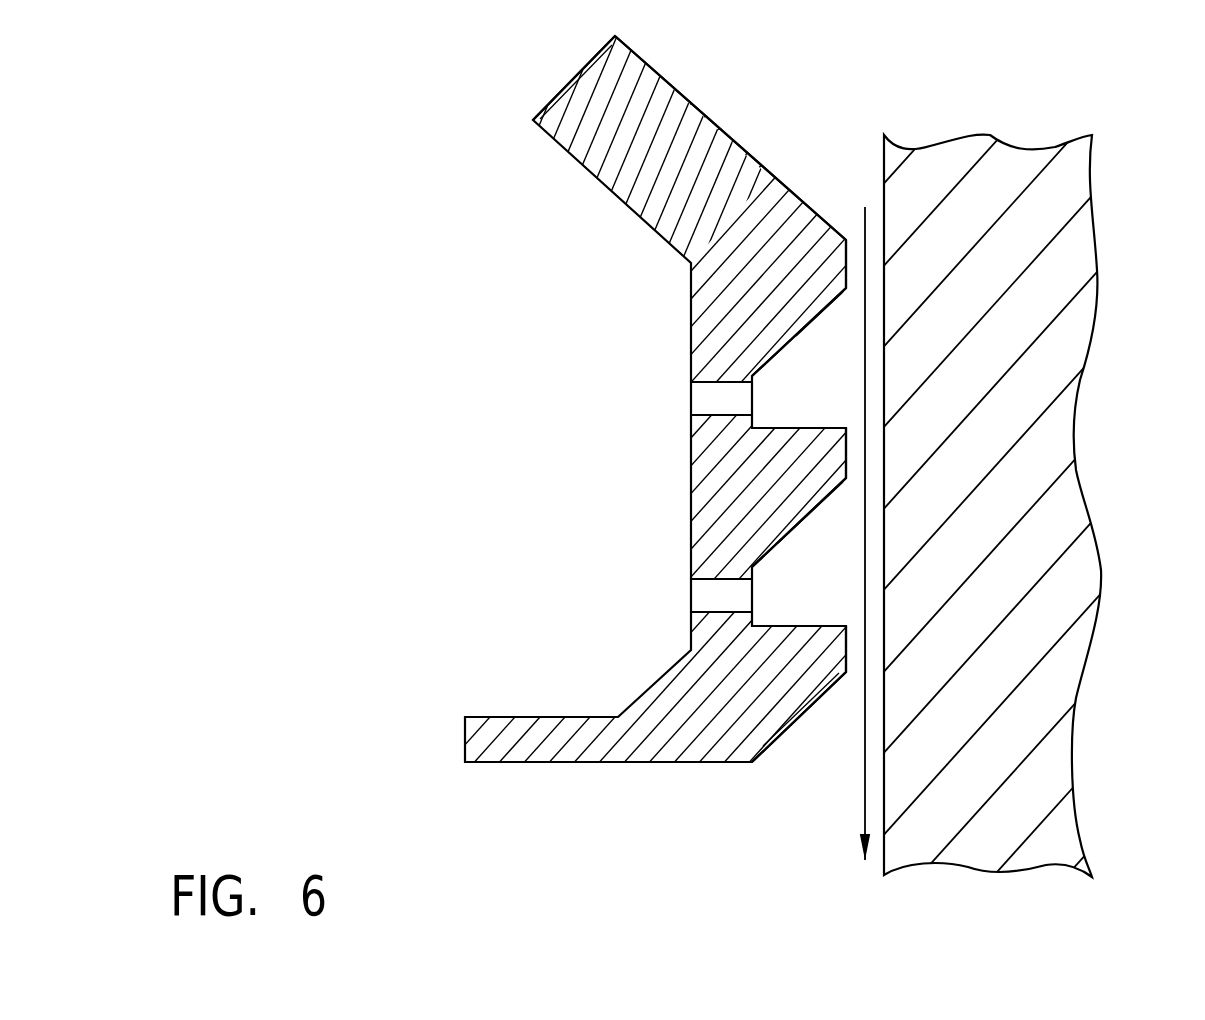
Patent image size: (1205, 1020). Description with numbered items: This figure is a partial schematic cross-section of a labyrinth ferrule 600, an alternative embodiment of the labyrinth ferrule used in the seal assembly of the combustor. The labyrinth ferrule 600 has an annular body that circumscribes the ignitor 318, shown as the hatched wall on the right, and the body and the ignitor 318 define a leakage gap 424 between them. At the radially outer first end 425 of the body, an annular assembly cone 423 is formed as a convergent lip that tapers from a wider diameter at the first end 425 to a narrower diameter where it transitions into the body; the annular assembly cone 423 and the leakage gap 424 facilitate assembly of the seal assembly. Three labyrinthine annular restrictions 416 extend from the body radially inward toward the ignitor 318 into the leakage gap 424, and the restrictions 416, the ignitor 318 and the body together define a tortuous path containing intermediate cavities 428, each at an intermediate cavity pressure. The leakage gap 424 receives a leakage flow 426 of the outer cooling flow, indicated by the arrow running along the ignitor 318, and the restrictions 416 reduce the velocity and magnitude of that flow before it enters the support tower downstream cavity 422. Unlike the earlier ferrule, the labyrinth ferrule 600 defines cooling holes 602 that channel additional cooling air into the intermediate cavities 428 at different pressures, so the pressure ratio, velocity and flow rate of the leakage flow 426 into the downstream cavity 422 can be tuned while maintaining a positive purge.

The labyrinth ferrule 600 is at (468, 121).
The ignitor 318 is at (1013, 160).
The labyrinthine annular restrictions 416 is at (837, 277).
The first end 425 is at (592, 68).
The cooling holes 602 is at (703, 398).
The intermediate cavities 428 is at (800, 582).
The leakage flow 426 is at (865, 782).
The support tower downstream cavity 422 is at (832, 881).
The annular assembly cone 423 is at (780, 104).
The leakage gap 424 is at (822, 153).